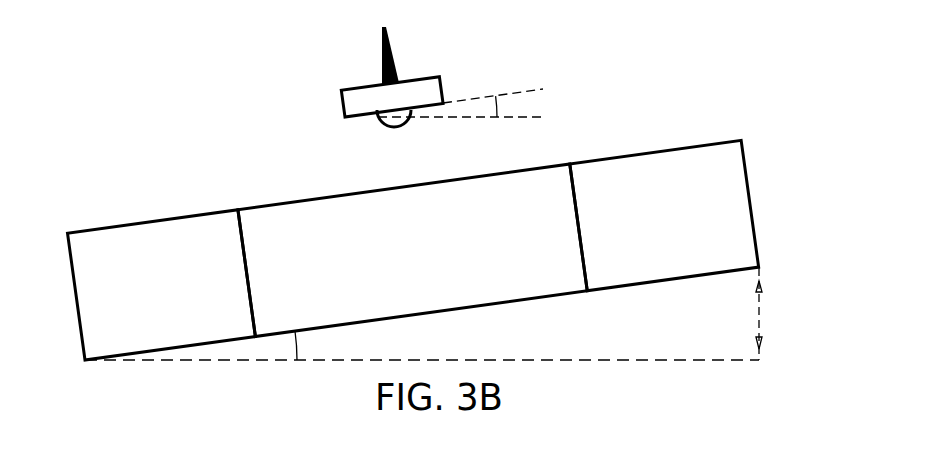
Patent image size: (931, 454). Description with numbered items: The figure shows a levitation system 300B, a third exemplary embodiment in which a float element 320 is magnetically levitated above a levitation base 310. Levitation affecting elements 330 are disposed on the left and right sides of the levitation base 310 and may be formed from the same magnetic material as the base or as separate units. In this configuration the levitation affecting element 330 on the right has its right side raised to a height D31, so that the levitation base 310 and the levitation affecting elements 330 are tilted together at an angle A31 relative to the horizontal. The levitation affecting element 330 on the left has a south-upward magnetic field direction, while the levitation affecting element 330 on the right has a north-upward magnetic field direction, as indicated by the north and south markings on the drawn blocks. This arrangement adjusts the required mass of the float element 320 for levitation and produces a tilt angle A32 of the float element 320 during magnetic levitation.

The levitation system 300B is at (643, 108).
The levitation base 310 is at (327, 197).
The float element 320 is at (423, 80).
The levitation affecting element 330 is at (148, 222).
The angle A31 is at (297, 347).
The tilt angle A32 is at (497, 104).
The height D31 is at (759, 312).